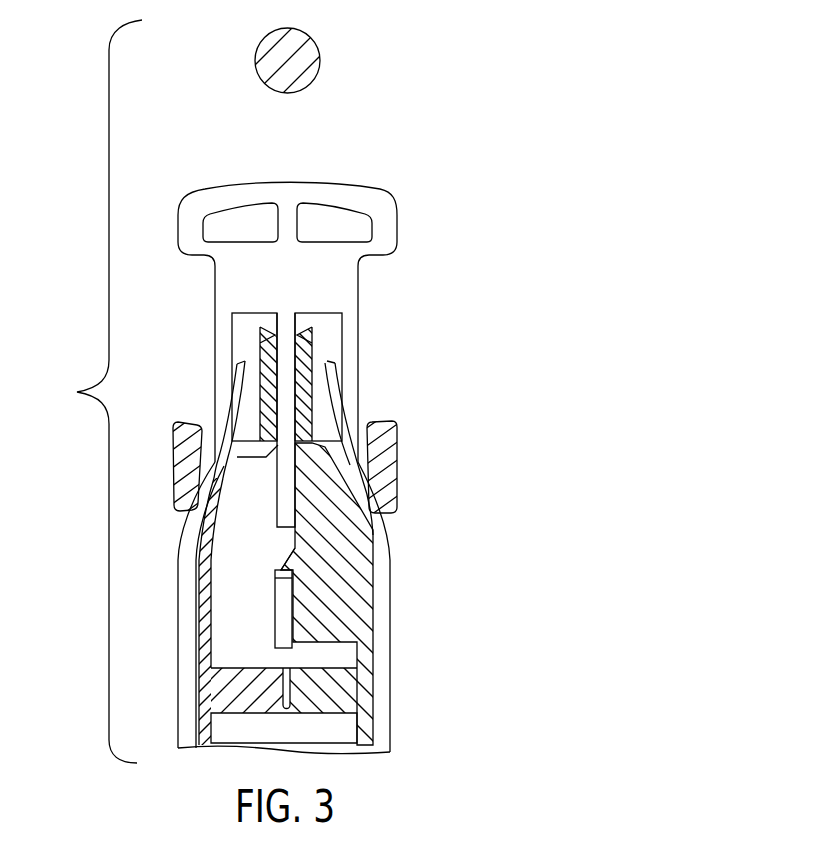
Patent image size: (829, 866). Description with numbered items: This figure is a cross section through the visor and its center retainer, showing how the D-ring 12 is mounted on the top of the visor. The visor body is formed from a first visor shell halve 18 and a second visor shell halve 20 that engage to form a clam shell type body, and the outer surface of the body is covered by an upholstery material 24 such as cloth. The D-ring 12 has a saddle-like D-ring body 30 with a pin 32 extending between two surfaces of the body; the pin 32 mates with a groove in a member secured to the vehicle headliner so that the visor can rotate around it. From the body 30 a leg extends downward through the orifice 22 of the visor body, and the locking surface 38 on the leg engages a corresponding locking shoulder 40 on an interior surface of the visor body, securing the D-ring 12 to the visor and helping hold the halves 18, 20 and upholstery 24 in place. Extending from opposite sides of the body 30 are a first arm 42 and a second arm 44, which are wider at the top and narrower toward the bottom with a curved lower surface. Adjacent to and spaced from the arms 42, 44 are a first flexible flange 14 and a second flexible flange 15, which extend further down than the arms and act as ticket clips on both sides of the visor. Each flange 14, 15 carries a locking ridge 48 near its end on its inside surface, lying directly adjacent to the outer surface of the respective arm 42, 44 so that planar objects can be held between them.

The D-ring 12 is at (386, 180).
The first flexible flange 14 is at (180, 443).
The second flexible flange 15 is at (387, 452).
The first visor shell halve 18 is at (203, 633).
The second visor shell halve 20 is at (363, 628).
The orifice 22 is at (307, 333).
The upholstery material 24 is at (192, 578).
The D-ring body 30 is at (293, 263).
The pin 32 is at (317, 42).
The locking surface 38 is at (275, 571).
The locking shoulder 40 is at (290, 556).
The first arm 42 is at (220, 347).
The second arm 44 is at (347, 335).
The locking ridge 48 is at (208, 427).